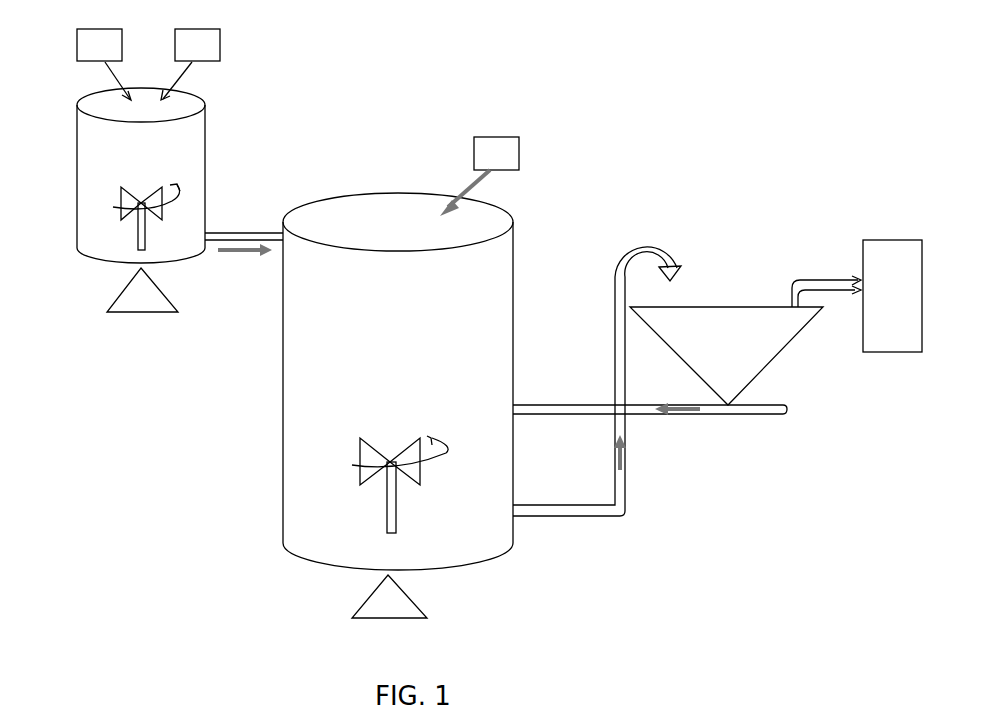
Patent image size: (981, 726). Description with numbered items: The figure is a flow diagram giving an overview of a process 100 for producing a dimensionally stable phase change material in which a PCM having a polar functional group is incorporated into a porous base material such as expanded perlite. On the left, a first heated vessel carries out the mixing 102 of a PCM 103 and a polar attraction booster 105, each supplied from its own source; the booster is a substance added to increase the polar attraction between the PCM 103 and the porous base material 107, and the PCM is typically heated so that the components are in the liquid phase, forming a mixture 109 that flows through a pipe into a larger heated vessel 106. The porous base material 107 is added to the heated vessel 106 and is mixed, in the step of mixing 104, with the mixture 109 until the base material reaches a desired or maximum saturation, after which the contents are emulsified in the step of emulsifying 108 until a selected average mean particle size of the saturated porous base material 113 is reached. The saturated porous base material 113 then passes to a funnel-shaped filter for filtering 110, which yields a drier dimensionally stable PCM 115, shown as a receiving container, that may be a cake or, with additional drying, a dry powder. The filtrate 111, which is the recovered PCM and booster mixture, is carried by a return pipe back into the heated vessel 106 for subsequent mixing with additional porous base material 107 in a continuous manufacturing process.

The process 100 is at (497, 81).
The mixing 102 is at (209, 168).
The PCM 103 is at (228, 36).
The mixing 104 is at (422, 343).
The polar attraction booster 105 is at (74, 47).
The heated vessel 106 is at (283, 467).
The porous base material 107 is at (522, 146).
The emulsifying 108 is at (350, 400).
The mixture 109 is at (247, 256).
The filtering 110 is at (784, 354).
The filtrate 111 is at (688, 418).
The saturated porous base material 113 is at (628, 500).
The dimensionally stable PCM 115 is at (888, 240).